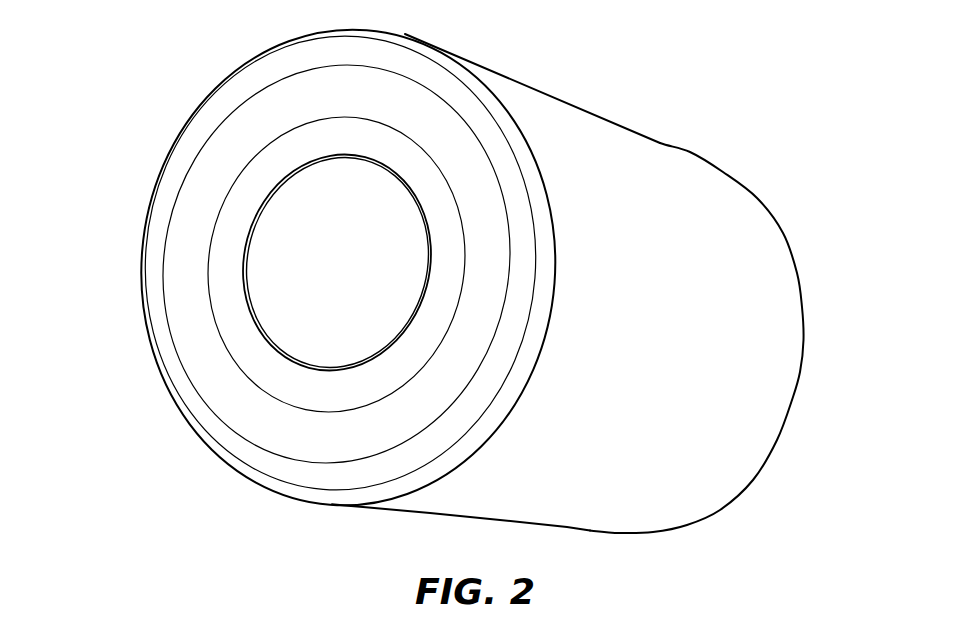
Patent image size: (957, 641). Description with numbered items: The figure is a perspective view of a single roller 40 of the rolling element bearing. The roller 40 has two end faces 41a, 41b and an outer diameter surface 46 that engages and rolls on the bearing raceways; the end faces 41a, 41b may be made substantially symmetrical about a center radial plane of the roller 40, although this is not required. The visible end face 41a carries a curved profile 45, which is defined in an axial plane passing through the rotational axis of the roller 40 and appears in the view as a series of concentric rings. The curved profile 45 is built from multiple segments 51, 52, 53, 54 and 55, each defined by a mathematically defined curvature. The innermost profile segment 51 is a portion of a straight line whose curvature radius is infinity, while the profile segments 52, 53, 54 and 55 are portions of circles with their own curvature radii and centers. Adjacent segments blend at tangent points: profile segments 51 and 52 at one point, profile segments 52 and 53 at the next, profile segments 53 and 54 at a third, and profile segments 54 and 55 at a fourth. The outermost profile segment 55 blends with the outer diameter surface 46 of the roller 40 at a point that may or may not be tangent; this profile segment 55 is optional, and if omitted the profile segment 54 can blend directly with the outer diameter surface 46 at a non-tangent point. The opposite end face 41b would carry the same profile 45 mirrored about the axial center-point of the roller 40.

The roller 40 is at (459, 270).
The end face 41a is at (305, 265).
The end face 41b is at (802, 353).
The curved profile 45 is at (316, 265).
The outer diameter surface 46 is at (661, 168).
The profile segment 51 is at (247, 358).
The profile segment 52 is at (245, 408).
The profile segment 53 is at (298, 469).
The profile segment 54 is at (333, 42).
The profile segment 55 is at (488, 87).